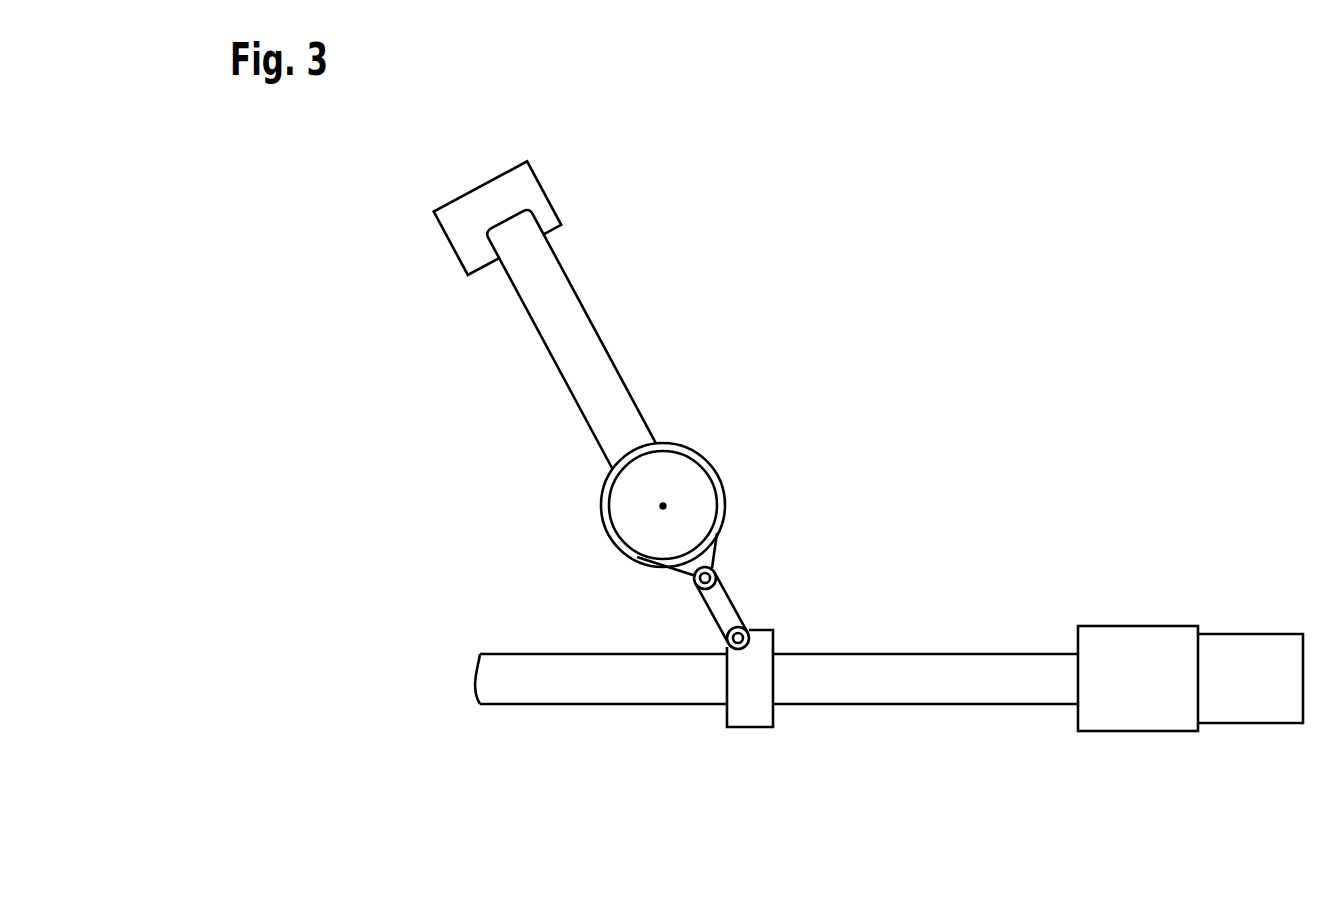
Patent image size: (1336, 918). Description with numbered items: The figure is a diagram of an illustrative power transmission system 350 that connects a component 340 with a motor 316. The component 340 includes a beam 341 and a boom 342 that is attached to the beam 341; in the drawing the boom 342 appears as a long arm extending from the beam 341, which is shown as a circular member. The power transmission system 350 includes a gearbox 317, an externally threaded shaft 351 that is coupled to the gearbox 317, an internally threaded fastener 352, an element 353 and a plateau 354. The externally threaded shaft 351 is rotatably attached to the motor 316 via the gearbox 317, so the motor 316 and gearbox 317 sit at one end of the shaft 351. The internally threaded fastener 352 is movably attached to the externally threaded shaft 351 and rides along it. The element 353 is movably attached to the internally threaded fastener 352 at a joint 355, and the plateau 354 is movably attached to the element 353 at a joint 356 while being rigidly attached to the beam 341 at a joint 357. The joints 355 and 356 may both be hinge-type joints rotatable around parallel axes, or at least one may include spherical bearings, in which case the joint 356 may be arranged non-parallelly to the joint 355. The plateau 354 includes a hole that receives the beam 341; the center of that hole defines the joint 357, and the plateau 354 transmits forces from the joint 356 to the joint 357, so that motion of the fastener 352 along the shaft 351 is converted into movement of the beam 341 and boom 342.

The component 340 is at (589, 368).
The beam 341 is at (680, 467).
The boom 342 is at (535, 282).
The power transmission system 350 is at (889, 550).
The externally threaded shaft 351 is at (961, 688).
The internally threaded fastener 352 is at (753, 707).
The element 353 is at (720, 607).
The plateau 354 is at (710, 555).
The joint 355 is at (765, 623).
The joint 356 is at (685, 592).
The joint 357 is at (640, 522).
The motor 316 is at (1265, 697).
The gearbox 317 is at (1142, 707).